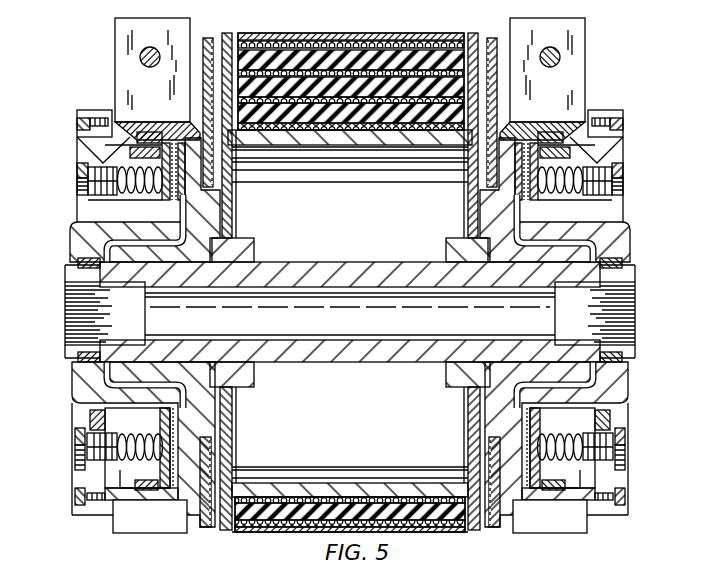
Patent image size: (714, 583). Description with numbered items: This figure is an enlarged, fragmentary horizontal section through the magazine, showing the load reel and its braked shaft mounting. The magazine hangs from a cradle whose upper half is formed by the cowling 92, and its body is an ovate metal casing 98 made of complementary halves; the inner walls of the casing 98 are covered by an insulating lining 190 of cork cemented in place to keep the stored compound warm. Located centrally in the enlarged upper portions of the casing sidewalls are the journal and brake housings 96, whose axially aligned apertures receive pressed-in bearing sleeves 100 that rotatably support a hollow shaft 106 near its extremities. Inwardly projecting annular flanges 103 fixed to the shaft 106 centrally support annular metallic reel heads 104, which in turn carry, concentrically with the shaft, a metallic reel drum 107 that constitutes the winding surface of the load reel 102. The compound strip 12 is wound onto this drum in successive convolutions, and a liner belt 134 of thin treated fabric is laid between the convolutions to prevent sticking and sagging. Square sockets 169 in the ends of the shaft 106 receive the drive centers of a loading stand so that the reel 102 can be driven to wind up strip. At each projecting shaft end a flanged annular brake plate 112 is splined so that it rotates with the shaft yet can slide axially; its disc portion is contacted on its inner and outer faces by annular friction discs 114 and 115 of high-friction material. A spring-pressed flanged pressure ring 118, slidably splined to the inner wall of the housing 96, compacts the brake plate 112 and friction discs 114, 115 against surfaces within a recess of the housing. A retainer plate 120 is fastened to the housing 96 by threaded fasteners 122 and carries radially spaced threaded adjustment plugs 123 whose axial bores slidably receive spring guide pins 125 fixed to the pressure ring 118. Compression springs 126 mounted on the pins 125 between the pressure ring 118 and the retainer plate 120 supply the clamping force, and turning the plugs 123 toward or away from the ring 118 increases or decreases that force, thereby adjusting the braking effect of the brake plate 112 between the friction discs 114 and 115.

The compound strip 12 is at (276, 524).
The cowling 92 is at (115, 62).
The journal and brake housing 96 is at (106, 110).
The ovate metal casing 98 is at (208, 38).
The bearing sleeve 100 is at (140, 272).
The load reel 102 is at (370, 28).
The annular flange 103 is at (258, 246).
The reel head 104 is at (238, 28).
The hollow shaft 106 is at (352, 258).
The reel drum 107 is at (305, 485).
The brake plate 112 is at (73, 230).
The friction disc 114 is at (200, 411).
The friction disc 115 is at (200, 430).
The pressure ring 118 is at (130, 153).
The retainer plate 120 is at (78, 136).
The threaded fastener 122 is at (76, 497).
The adjustment plug 123 is at (76, 436).
The spring guide pin 125 is at (134, 442).
The compression spring 126 is at (140, 192).
The liner belt 134 is at (380, 497).
The square socket 169 is at (66, 287).
The insulating lining 190 is at (205, 101).